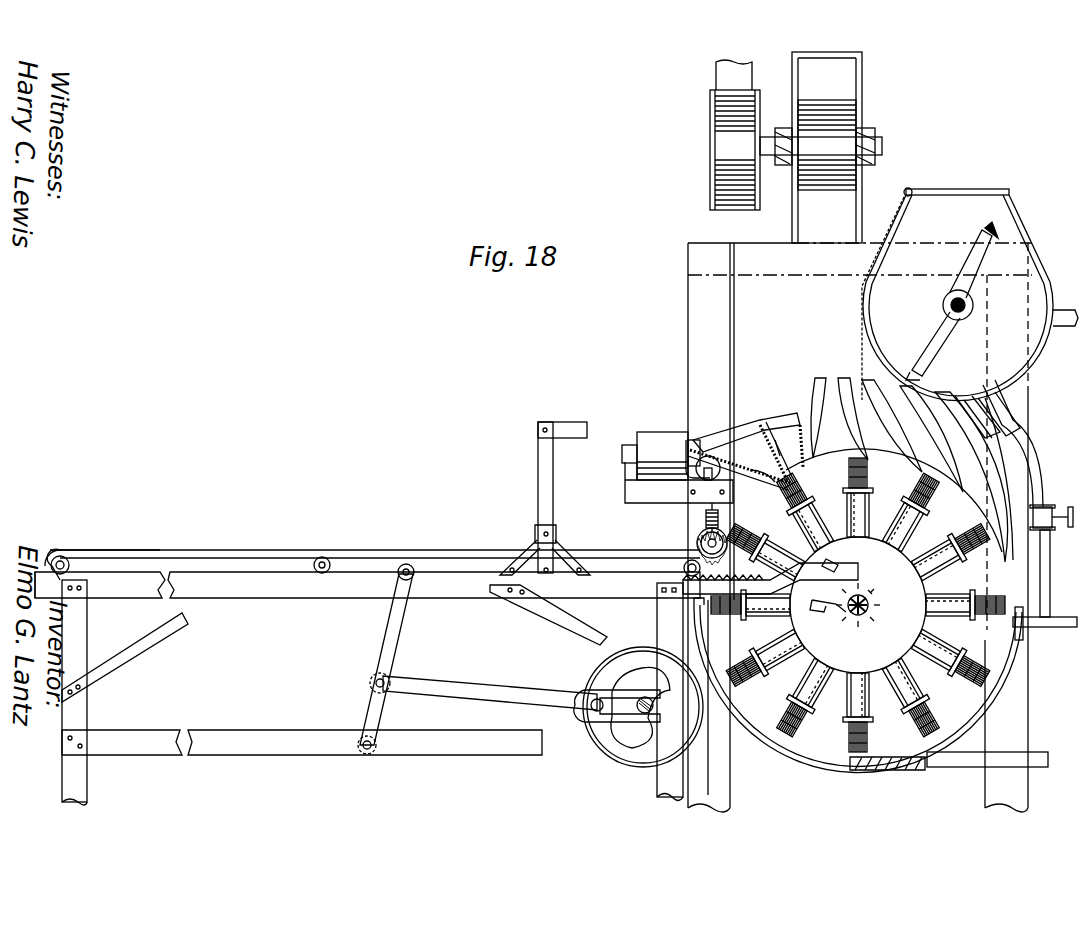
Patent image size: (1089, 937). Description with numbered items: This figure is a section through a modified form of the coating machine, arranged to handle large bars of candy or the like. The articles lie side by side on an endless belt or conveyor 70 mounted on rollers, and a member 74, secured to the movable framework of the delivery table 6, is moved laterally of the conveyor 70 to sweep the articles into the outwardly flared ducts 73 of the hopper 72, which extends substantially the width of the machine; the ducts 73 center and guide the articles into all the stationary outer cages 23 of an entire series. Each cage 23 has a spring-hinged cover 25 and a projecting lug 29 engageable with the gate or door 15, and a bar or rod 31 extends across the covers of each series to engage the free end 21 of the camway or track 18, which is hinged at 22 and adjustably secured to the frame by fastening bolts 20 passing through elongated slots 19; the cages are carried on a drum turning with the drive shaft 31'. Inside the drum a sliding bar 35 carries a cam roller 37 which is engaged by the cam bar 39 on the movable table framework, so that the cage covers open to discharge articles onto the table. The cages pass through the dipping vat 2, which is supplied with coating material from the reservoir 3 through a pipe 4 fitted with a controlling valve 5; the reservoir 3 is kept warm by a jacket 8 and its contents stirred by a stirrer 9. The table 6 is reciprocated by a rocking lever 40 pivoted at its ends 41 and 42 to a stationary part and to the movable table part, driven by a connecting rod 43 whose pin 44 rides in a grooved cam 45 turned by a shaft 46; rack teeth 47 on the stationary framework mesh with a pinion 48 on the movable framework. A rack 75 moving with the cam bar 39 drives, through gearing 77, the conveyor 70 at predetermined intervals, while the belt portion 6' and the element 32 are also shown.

The dipping vat 2 is at (1002, 704).
The reservoir 3 is at (988, 206).
The pipe 4 is at (1050, 580).
The controlling valve 5 is at (1052, 514).
The delivery table 6 is at (367, 563).
The conveyor belt end 6' is at (105, 538).
The jacket 8 is at (1042, 277).
The stirrer 9 is at (940, 333).
The gate or door 15 is at (779, 442).
The camway or track 18 is at (778, 484).
The elongated slot 19 is at (700, 402).
The fastening bolt 20 is at (513, 530).
The free end of guide 21 is at (795, 508).
The hinge 22 is at (785, 498).
The stationary outer cage 23 is at (966, 590).
The cover 25 is at (850, 460).
The abutment or lug 29 is at (970, 640).
The bar or rod 31 is at (950, 665).
The drive shaft 31' is at (882, 578).
The hopper wall tube 32 is at (862, 247).
The bar 35 is at (877, 606).
The cam roller 37 is at (846, 572).
The cam bar 39 is at (824, 618).
The rocking lever 40 is at (386, 692).
The pivot end 41 is at (363, 752).
The pivot end 42 is at (400, 580).
The connecting rod 43 is at (445, 680).
The pin 44 is at (592, 712).
The grooved cam 45 is at (640, 760).
The shaft 46 is at (640, 712).
The rack teeth 47 is at (770, 585).
The pinion 48 is at (666, 583).
The endless belt or conveyor 70 is at (652, 434).
The hopper 72 is at (772, 416).
The outwardly flared duct 73 is at (722, 432).
The sweeping member 74 is at (572, 424).
The rack 75 is at (684, 564).
The gearing 77 is at (705, 534).